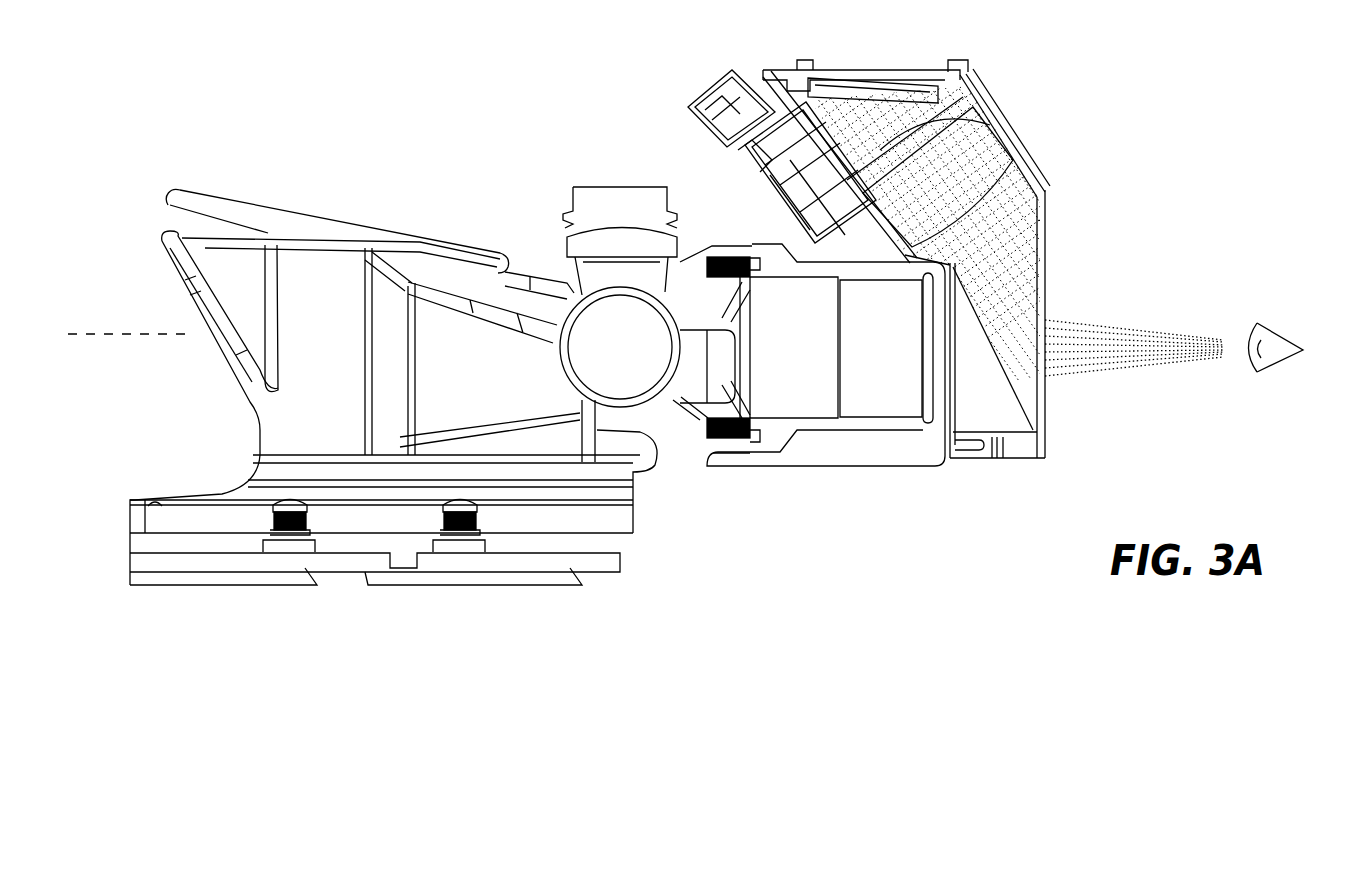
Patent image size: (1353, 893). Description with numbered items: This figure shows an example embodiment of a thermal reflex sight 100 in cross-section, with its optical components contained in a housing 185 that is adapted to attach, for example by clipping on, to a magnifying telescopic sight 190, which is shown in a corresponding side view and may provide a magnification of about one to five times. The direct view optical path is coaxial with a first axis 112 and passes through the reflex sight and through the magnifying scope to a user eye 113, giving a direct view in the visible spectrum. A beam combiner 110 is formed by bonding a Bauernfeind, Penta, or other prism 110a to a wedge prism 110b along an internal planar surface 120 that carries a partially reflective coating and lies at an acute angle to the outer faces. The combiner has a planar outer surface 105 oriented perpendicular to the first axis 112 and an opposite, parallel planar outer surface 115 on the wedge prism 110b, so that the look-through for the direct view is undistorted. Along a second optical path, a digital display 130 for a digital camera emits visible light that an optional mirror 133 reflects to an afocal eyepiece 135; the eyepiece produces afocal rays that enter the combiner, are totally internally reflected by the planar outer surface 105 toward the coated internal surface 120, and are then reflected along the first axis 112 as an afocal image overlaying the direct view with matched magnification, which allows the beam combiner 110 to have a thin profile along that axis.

The thermal reflex sight 100 is at (1095, 46).
The planar outer surface 105 is at (1045, 220).
The beam combiner 110 is at (1065, 435).
The prism 110a is at (1028, 383).
The wedge prism 110b is at (990, 403).
The first axis 112 is at (99, 334).
The user eye 113 is at (1263, 368).
The planar outer surface 115 is at (927, 430).
The internal planar surface 120 is at (1033, 400).
The digital display 130 is at (718, 166).
The mirror 133 is at (882, 88).
The afocal eyepiece 135 is at (1030, 162).
The housing 185 is at (772, 68).
The magnifying telescopic sight 190 is at (370, 196).